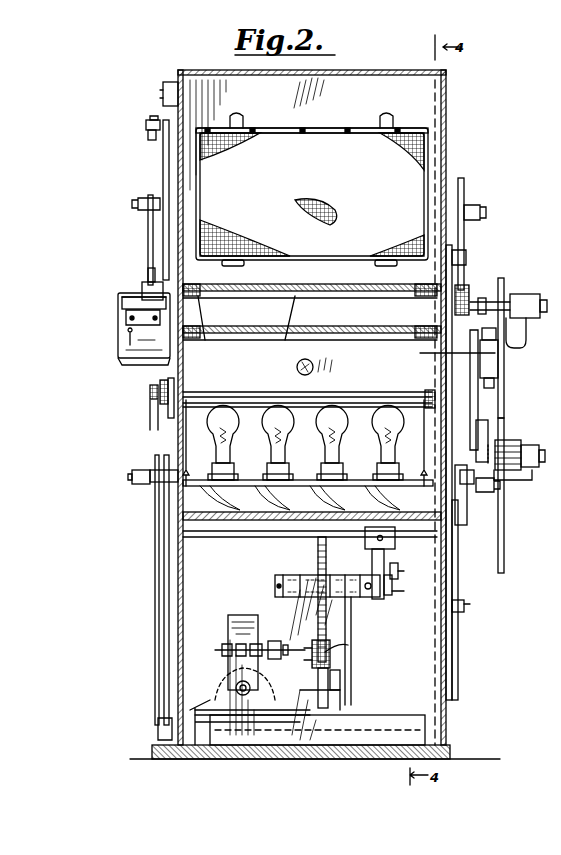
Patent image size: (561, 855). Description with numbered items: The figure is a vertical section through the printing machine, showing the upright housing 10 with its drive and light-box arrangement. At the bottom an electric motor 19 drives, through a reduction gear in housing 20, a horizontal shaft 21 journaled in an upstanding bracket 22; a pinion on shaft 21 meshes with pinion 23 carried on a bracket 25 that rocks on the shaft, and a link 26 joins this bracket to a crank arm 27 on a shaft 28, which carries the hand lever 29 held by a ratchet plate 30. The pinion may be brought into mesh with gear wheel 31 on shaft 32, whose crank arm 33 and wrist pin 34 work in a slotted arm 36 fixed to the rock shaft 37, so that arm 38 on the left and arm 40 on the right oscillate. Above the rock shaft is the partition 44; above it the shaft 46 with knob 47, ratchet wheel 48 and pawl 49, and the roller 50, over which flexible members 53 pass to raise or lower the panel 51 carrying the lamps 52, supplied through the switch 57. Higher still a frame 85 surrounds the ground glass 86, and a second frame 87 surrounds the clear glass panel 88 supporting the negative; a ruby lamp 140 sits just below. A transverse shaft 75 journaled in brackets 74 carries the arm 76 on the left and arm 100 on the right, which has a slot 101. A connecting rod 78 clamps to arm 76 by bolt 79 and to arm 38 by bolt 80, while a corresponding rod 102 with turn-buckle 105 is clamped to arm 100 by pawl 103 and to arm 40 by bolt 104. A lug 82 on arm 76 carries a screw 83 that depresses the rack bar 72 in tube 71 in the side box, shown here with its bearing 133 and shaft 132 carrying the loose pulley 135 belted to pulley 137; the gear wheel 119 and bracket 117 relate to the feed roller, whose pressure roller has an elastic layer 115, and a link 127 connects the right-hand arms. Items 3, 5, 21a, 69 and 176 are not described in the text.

The section line 3 is at (526, 410).
The shelf 5 is at (315, 283).
The housing 10 is at (451, 691).
The electric motor 19 is at (264, 700).
The reduction gear housing 20 is at (241, 628).
The horizontally disposed shaft 21 is at (285, 645).
The shaft bearing 21a is at (314, 688).
The upstanding bracket 22 is at (352, 624).
The pinion 23 is at (348, 645).
The bracket 25 is at (330, 656).
The link 26 is at (340, 686).
The crank arm 27 is at (330, 703).
The horizontally disposed shaft 28 is at (196, 710).
The hand lever 29 is at (160, 675).
The ratchet plate 30 is at (170, 478).
The gear wheel 31 is at (318, 553).
The shaft 32 is at (275, 588).
The crank arm 33 is at (372, 566).
The wrist pin 34 is at (408, 570).
The arm 36 is at (394, 592).
The rock shaft 37 is at (238, 538).
The arm 38 is at (155, 514).
The arm 40 is at (458, 525).
The partition 44 is at (302, 520).
The shaft 46 is at (338, 395).
The knob 47 is at (150, 393).
The ratchet wheel 48 is at (160, 400).
The spring pressed pawl 49 is at (168, 420).
The roller 50 is at (230, 433).
The panel 51 is at (248, 480).
The electric lamps 52 is at (335, 432).
The flexible members 53 is at (188, 460).
The switch 57 is at (163, 92).
The control box 69 is at (112, 347).
The tube 71 is at (142, 286).
The rack bar 72 is at (148, 268).
The brackets 74 is at (176, 282).
The shaft 75 is at (466, 258).
The arm 76 is at (163, 178).
The two-part connecting rod 78 is at (148, 244).
The clamping bolt 79 is at (132, 210).
The clamping bolt 80 is at (130, 474).
The lug 82 is at (146, 126).
The screw 83 is at (150, 138).
The frame 85 is at (322, 332).
The ground glass 86 is at (433, 336).
The second frame 87 is at (222, 345).
The panel of clear glass 88 is at (285, 340).
The arm 100 is at (464, 188).
The slot 101 is at (515, 307).
The two-piece connecting rod 102 is at (480, 390).
The pawl 103 is at (486, 212).
The clamping bolt 104 is at (495, 488).
The turn-buckle 105 is at (420, 353).
The layer 115 is at (470, 424).
The bracket 117 is at (506, 357).
The gear wheel 119 is at (469, 298).
The link 127 is at (470, 495).
The shaft 132 is at (545, 458).
The bearing 133 is at (520, 478).
The pulley 135 is at (498, 446).
The pulley 137 is at (504, 290).
The ruby lamp 140 is at (296, 373).
The rod 176 is at (504, 388).